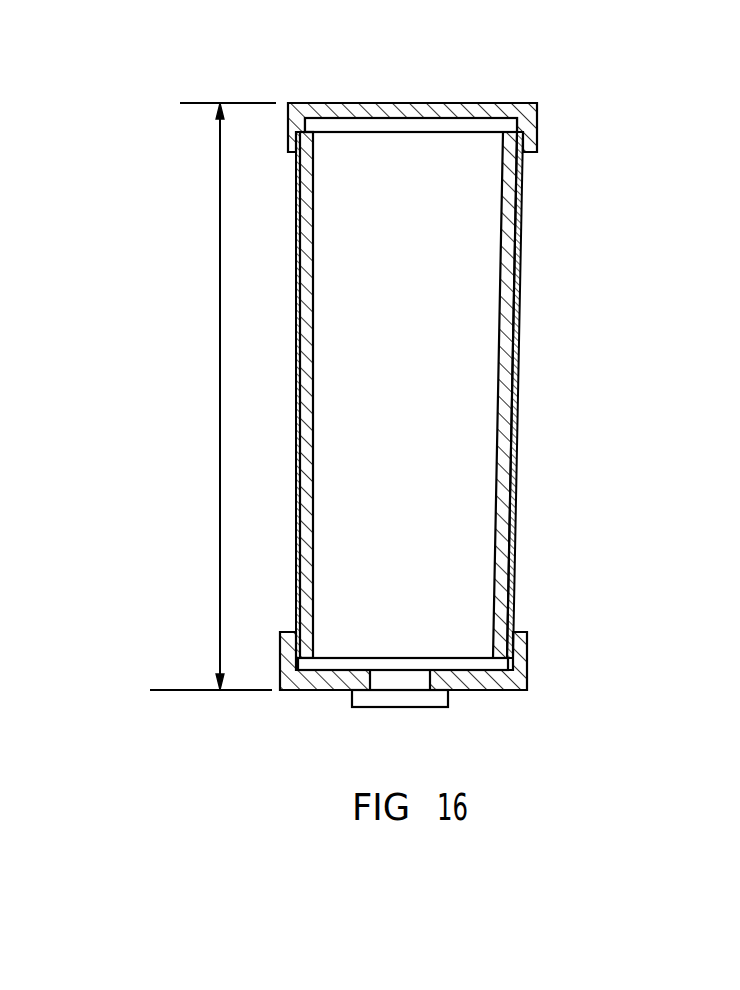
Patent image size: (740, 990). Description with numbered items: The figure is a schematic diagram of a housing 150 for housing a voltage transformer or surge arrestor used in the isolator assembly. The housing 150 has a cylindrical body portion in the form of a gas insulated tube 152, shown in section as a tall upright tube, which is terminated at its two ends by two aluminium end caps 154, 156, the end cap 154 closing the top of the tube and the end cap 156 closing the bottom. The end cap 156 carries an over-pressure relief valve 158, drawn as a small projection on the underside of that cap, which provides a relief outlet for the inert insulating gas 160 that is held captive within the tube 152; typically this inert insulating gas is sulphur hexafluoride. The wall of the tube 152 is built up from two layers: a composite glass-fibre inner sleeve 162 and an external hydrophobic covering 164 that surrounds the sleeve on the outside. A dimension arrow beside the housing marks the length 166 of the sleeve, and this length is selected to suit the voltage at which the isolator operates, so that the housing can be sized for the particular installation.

The housing 150 is at (186, 289).
The gas insulated tube 152 is at (296, 455).
The end cap 154 is at (449, 108).
The end cap 156 is at (328, 690).
The over-pressure relief valve 158 is at (400, 696).
The inert insulating gas 160 is at (438, 403).
The composite glass-fibre inner sleeve 162 is at (511, 179).
The external hydrophobic covering 164 is at (522, 243).
The length 166 is at (220, 362).